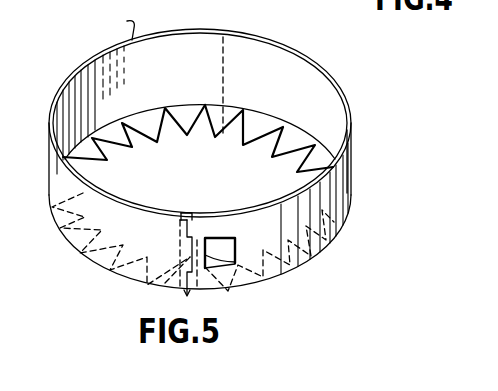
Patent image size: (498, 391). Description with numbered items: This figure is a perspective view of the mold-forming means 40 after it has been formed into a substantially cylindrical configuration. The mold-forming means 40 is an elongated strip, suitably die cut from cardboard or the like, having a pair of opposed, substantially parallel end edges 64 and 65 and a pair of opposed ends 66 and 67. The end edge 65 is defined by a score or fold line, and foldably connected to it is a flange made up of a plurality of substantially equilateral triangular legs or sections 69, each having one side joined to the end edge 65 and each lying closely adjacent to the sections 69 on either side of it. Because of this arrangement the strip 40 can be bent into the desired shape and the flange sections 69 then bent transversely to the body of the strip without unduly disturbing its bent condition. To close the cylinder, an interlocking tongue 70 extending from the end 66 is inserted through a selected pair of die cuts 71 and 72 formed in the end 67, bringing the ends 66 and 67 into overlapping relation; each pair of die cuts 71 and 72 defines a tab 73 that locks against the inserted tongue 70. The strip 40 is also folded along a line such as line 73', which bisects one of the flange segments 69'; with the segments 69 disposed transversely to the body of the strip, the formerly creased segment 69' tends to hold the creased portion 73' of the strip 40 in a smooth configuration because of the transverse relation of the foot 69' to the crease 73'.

The mold-forming means 40 is at (313, 85).
The end edge 64 is at (117, 27).
The end edge 65 is at (108, 268).
The end 66 is at (204, 222).
The end 67 is at (175, 229).
The triangular sections 69 is at (134, 139).
The flange segment 69' is at (269, 139).
The interlocking tongue 70 is at (224, 244).
The die cut 71 is at (239, 241).
The die cut 72 is at (183, 291).
The tab 73 is at (226, 281).
The fold line 73' is at (258, 73).